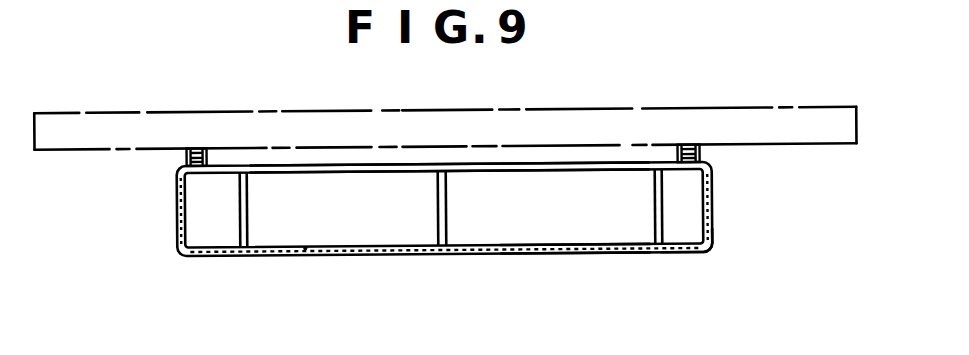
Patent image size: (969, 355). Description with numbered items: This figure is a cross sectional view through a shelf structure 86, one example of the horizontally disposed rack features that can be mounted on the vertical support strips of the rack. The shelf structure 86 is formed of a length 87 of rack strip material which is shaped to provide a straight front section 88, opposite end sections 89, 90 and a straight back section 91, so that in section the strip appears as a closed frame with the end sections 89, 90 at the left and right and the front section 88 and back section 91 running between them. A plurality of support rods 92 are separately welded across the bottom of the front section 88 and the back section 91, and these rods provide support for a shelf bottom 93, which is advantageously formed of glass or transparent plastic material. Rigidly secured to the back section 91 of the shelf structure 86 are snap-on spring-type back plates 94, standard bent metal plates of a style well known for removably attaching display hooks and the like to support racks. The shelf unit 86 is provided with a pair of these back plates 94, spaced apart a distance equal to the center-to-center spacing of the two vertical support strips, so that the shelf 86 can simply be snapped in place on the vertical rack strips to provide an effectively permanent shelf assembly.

The shelf structure 86 is at (385, 213).
The length of rack strip material 87 is at (620, 255).
The straight front section 88 is at (685, 253).
The end section 89 is at (177, 205).
The end section 90 is at (713, 198).
The straight back section 91 is at (492, 170).
The support rods 92 is at (250, 212).
The shelf bottom 93 is at (507, 232).
The snap-on spring-type back plates 94 is at (187, 156).